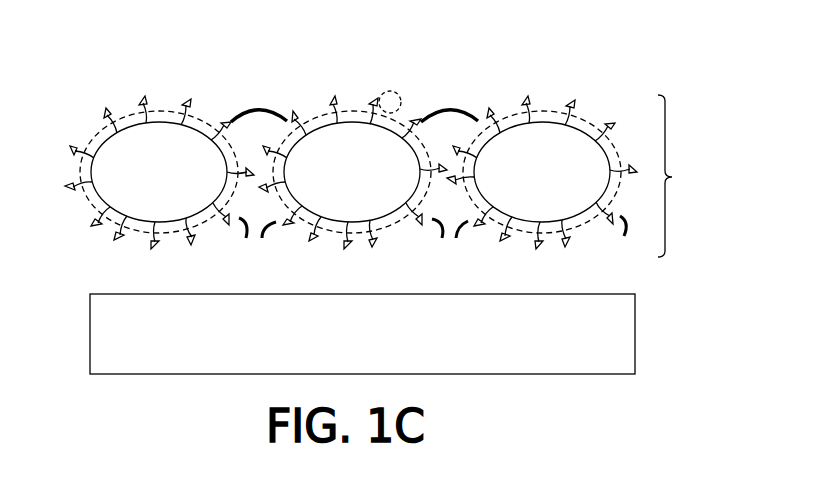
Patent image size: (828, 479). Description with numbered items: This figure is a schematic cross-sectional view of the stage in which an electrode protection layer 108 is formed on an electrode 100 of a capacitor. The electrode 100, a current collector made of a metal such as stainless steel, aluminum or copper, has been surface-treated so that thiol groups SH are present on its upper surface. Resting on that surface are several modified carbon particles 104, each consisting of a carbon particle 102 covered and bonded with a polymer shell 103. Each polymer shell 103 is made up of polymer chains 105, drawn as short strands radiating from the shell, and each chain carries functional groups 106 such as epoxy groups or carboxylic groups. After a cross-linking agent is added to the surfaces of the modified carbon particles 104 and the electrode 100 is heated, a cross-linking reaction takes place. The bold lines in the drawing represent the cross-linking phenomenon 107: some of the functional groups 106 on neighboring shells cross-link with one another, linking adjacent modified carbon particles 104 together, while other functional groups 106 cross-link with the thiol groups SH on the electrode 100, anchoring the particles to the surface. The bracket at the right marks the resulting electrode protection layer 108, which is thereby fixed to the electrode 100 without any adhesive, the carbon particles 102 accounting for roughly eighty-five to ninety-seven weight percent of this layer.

The electrode 100 is at (610, 333).
The carbon particle 102 is at (173, 137).
The polymer shell 103 is at (180, 36).
The modified carbon particle 104 is at (346, 116).
The polymer chain 105 is at (80, 152).
The functional group 106 is at (400, 93).
The cross-linking phenomenon 107 is at (257, 112).
The electrode protection layer 108 is at (687, 176).
The thiol group SH is at (252, 294).